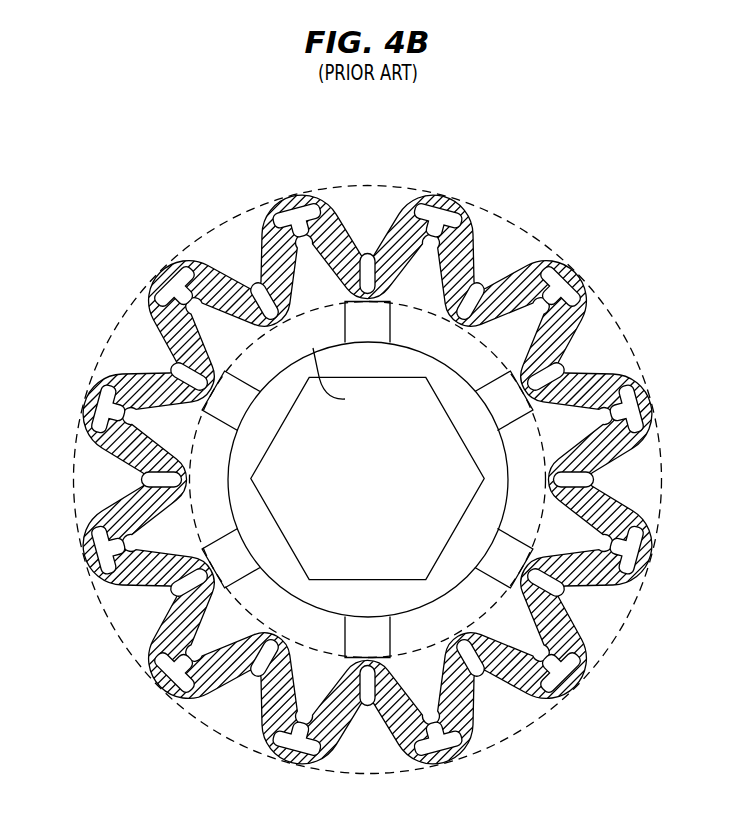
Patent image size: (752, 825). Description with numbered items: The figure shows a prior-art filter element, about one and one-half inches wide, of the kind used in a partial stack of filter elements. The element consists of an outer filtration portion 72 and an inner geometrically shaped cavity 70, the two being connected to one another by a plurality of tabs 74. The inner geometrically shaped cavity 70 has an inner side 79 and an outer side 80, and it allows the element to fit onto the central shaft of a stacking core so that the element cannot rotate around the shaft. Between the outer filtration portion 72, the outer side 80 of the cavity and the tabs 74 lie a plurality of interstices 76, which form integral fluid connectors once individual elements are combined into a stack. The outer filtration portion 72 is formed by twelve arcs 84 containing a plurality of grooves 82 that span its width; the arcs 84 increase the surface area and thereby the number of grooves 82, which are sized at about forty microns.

The inner geometrically shaped cavity 70 is at (367, 480).
The outer filtration portion 72 is at (395, 220).
The tabs 74 is at (493, 559).
The interstices 76 is at (262, 347).
The inner side 79 is at (273, 513).
The outer side 80 is at (341, 380).
The grooves 82 is at (508, 268).
The arcs 84 is at (577, 270).